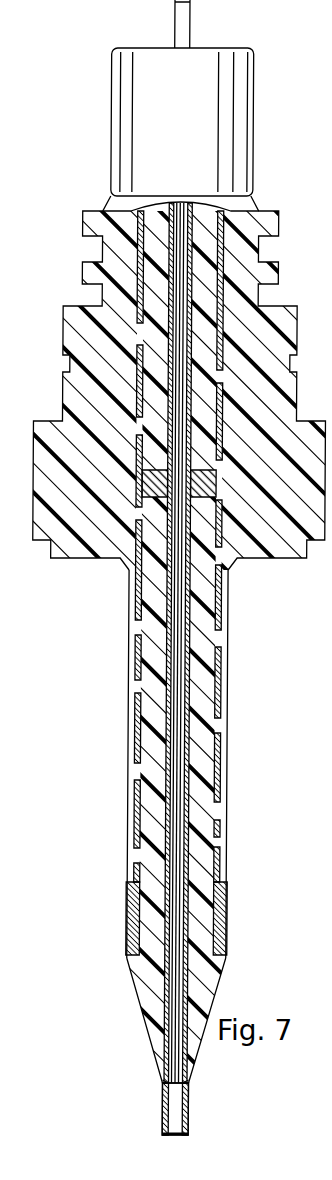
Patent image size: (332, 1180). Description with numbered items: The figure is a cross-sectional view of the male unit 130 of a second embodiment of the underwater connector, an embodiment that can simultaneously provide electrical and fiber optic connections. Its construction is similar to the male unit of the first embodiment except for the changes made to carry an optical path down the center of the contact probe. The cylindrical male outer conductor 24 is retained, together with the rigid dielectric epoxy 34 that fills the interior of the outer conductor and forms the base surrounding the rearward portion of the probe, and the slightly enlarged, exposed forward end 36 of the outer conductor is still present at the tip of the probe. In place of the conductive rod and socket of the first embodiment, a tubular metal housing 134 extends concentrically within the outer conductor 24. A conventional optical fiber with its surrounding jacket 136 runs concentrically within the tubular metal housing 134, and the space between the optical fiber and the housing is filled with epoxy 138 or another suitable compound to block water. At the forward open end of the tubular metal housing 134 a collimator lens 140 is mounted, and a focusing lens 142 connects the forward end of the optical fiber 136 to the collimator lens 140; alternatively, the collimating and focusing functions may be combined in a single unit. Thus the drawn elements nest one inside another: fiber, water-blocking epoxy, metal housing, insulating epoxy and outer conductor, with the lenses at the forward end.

The male outer conductor 24 is at (140, 835).
The epoxy 34 is at (150, 738).
The forward end of the outer conductor 36 is at (223, 908).
The male unit 130 is at (131, 994).
The tubular metal housing 134 is at (191, 643).
The optical fiber with surrounding jacket 136 is at (176, 818).
The epoxy 138 is at (178, 850).
The collimator lens 140 is at (178, 1107).
The focusing lens 142 is at (165, 1082).